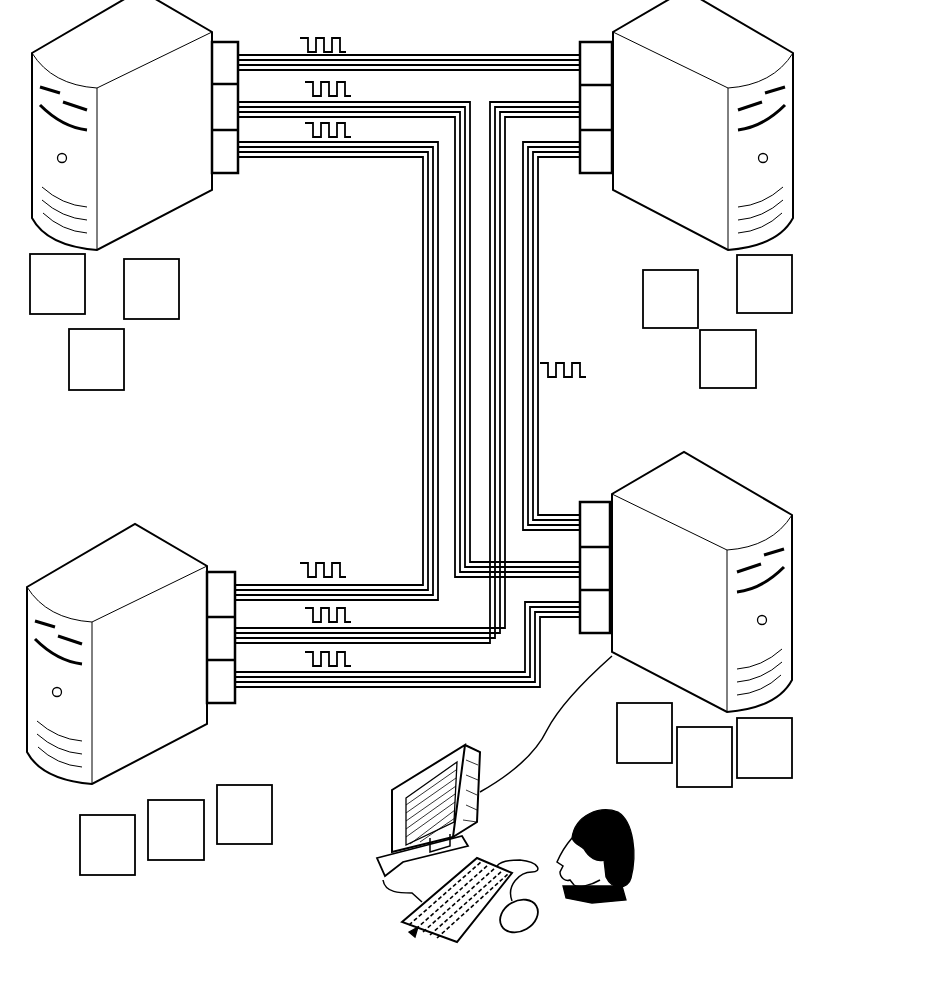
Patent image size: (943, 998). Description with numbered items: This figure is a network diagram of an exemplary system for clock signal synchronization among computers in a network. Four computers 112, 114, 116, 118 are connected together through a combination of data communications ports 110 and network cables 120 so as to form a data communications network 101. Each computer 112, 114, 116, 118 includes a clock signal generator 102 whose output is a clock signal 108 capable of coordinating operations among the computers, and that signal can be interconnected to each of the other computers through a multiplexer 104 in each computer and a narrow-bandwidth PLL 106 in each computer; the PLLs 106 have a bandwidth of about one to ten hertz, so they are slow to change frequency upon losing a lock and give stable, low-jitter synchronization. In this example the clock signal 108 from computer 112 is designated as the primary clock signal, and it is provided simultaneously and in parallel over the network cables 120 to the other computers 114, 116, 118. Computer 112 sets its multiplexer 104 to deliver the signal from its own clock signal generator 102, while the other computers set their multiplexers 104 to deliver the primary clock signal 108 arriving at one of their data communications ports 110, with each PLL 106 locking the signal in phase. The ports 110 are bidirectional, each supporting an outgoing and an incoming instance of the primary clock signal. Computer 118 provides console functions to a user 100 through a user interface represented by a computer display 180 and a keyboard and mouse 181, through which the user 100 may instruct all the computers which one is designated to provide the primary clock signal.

The user 100 is at (676, 868).
The data communications network 101 is at (286, 985).
The clock signal generator 102 is at (658, 753).
The multiplexer 104 is at (718, 777).
The narrow-bandwidth PLL 106 is at (778, 768).
The clock signal 108 is at (382, 56).
The data communications ports 110 is at (224, 182).
The computer 112 is at (146, 591).
The computer 114 is at (150, 60).
The computer 116 is at (695, 60).
The computer 118 is at (695, 516).
The network cables 120 is at (400, 372).
The computer display 180 is at (380, 838).
The keyboard and mouse 181 is at (565, 978).